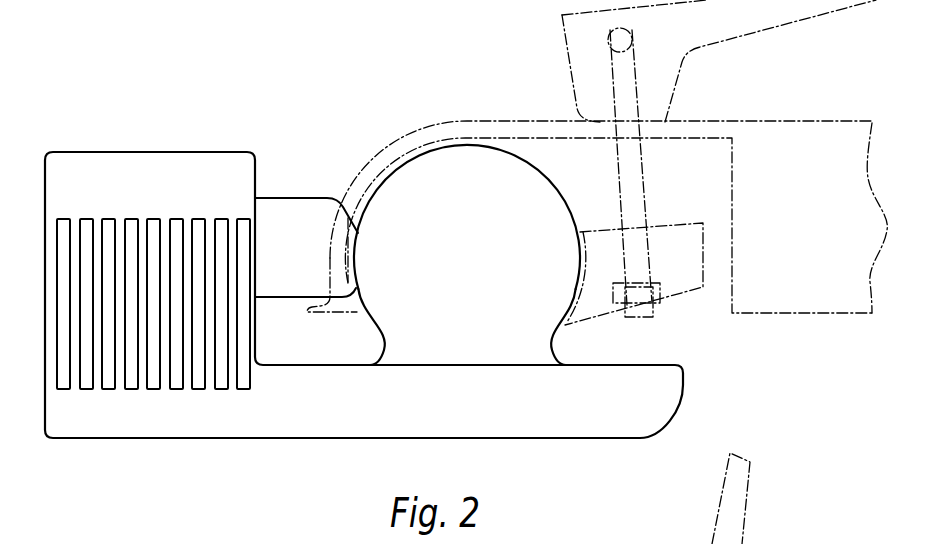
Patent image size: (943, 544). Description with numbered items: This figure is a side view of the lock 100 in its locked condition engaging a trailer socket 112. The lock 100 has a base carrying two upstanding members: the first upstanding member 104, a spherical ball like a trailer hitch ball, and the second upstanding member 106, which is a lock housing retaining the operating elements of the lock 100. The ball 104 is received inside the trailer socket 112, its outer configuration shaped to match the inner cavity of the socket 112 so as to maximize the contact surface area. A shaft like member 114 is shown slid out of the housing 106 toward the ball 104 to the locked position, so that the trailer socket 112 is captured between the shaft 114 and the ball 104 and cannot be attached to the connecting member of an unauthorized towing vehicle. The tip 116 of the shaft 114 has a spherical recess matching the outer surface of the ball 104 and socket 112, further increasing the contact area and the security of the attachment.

The lock 100 is at (206, 108).
The first upstanding member 104 is at (533, 343).
The second upstanding member 106 is at (98, 168).
The trailer socket 112 is at (445, 132).
The shaft like member 114 is at (282, 215).
The tip 116 is at (348, 213).